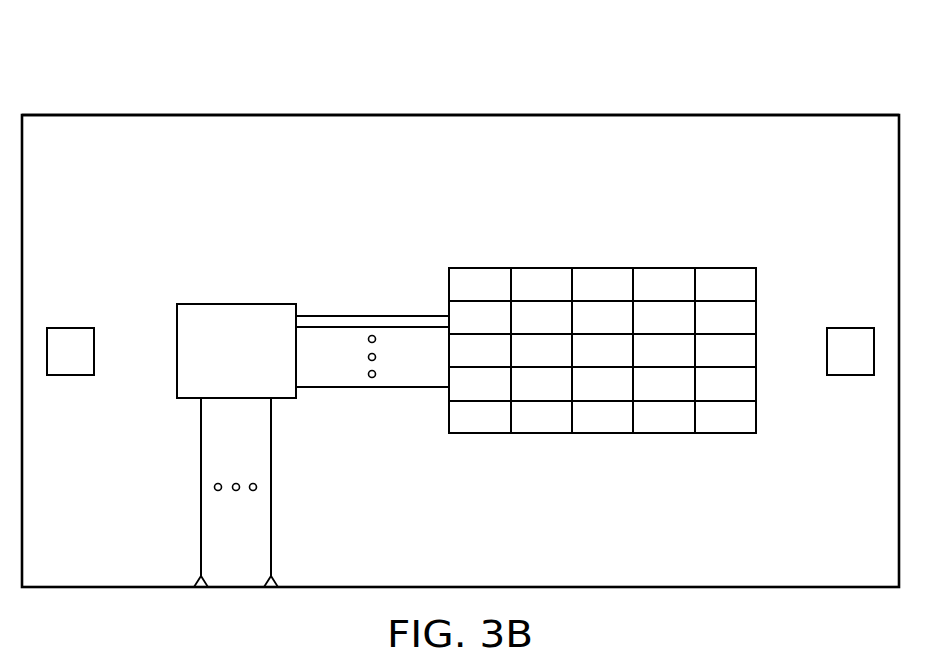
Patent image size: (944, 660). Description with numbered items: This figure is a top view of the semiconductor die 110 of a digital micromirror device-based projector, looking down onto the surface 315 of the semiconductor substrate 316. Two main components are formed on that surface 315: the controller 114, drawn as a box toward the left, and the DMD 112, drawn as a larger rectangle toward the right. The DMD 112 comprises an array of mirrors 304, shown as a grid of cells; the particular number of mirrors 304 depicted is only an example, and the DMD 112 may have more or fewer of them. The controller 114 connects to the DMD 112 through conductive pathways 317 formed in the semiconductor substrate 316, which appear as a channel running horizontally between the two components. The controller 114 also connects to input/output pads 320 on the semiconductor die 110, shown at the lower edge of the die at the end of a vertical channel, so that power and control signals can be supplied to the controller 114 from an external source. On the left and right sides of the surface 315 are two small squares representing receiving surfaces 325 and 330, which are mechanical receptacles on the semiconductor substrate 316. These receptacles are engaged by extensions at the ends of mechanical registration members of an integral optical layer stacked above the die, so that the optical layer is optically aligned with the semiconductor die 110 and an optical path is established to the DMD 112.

The semiconductor die 110 is at (114, 62).
The semiconductor substrate 316 is at (310, 108).
The surface 315 is at (458, 126).
The controller 114 is at (236, 303).
The conductive pathways 317 is at (355, 297).
The DMD 112 is at (665, 278).
The mirrors 304 is at (513, 283).
The receiving surface 325 is at (70, 327).
The receiving surface 330 is at (850, 327).
The input/output pads 320 is at (197, 582).